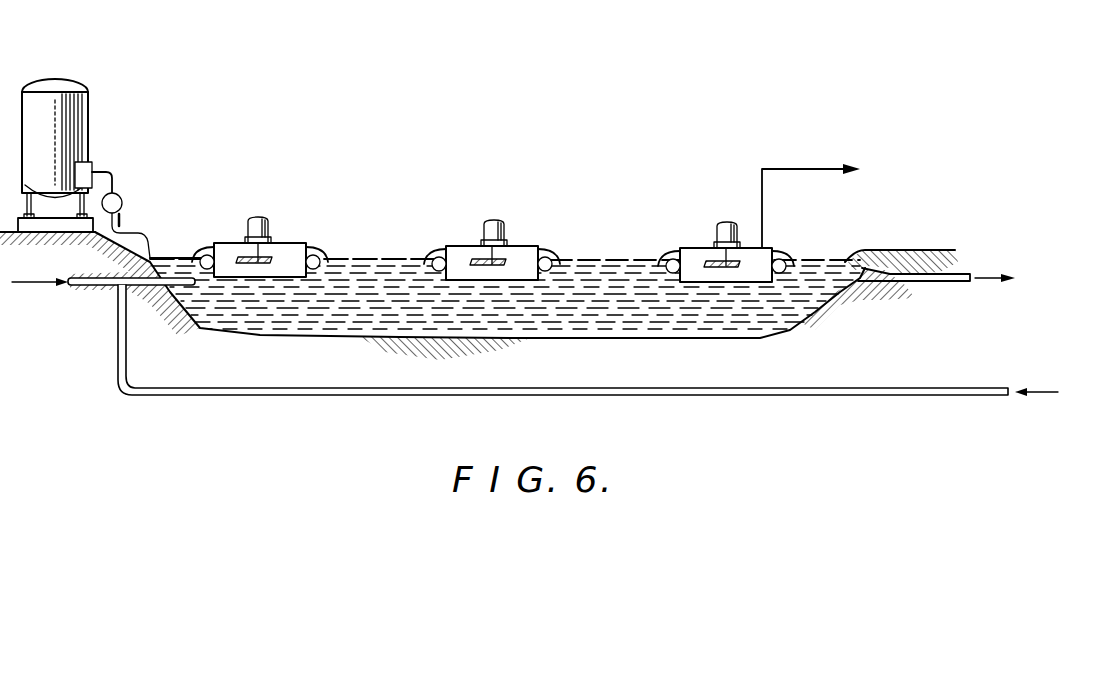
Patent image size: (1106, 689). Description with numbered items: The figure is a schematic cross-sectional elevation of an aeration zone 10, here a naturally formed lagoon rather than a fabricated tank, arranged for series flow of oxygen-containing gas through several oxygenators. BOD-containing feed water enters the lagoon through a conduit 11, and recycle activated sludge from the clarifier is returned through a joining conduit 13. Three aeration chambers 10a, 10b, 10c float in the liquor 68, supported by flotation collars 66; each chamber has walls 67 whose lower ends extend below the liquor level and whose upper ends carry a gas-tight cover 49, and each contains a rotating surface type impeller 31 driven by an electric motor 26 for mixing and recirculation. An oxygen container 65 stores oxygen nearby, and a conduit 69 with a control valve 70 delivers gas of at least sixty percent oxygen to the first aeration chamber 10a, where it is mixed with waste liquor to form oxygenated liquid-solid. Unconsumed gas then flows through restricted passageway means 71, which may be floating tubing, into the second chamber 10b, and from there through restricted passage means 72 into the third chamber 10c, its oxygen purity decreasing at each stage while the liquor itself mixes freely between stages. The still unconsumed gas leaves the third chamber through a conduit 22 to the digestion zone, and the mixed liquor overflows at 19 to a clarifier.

The aeration zone 10 is at (252, 330).
The first aeration chamber 10a is at (216, 250).
The second aeration chamber 10b is at (463, 250).
The third aeration chamber 10c is at (698, 252).
The conduit 11 is at (804, 391).
The conduit 13 is at (78, 287).
The overflow 19 is at (986, 270).
The conduit 22 is at (789, 168).
The electric motor 26 is at (259, 220).
The impeller 31 is at (242, 256).
The gas-tight cover 49 is at (284, 243).
The oxygen container 65 is at (57, 86).
The flotation collar 66 is at (320, 254).
The wall 67 is at (178, 257).
The liquor 68 is at (332, 318).
The conduit 69 is at (103, 163).
The control valve 70 is at (124, 203).
The restricted passageway means 71 is at (358, 256).
The restricted passage means 72 is at (586, 258).